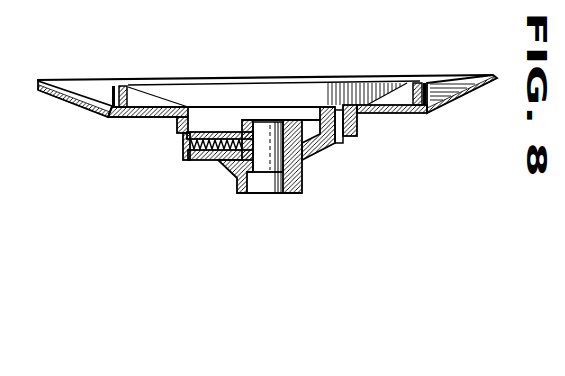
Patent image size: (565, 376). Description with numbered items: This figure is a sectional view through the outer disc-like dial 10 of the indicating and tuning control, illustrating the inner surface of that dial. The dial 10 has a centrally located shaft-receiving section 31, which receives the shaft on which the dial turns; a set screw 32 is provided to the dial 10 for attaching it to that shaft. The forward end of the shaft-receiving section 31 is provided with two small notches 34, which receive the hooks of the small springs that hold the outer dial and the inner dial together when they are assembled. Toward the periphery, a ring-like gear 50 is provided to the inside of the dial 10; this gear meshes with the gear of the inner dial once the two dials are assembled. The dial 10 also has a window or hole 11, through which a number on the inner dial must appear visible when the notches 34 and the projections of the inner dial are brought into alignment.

The dial 10 is at (395, 113).
The window or hole 11 is at (73, 103).
The ring-like gear 50 is at (114, 87).
The shaft-receiving section 31 is at (303, 189).
The set screw 32 is at (225, 160).
The notches 34 is at (270, 192).